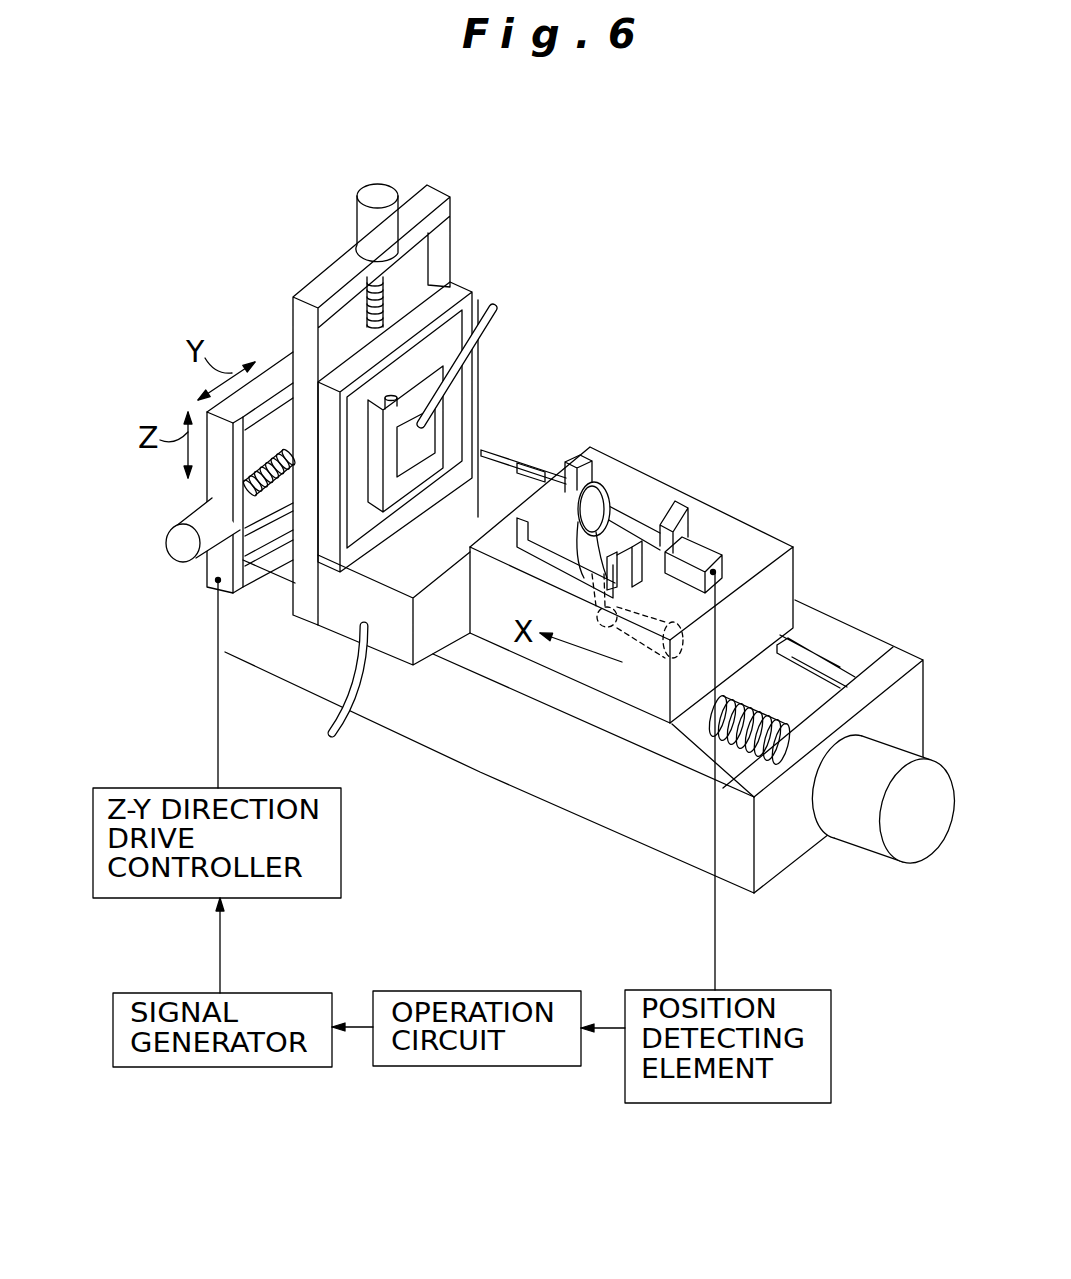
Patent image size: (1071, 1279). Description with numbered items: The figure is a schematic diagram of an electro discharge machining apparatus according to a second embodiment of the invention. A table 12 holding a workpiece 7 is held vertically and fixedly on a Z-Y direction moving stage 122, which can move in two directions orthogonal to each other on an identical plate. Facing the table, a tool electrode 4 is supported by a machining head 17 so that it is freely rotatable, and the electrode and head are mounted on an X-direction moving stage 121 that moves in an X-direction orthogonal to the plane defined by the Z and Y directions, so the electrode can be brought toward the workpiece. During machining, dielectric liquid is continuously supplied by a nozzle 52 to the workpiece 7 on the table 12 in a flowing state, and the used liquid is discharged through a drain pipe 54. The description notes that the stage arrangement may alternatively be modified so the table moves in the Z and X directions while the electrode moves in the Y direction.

The Z-Y direction moving stage 122 is at (283, 403).
The nozzle 52 is at (493, 323).
The table 12 is at (432, 415).
The workpiece 7 is at (423, 437).
The tool electrode 4 is at (497, 460).
The X-direction moving stage 121 is at (633, 477).
The machining head 17 is at (680, 528).
The drain pipe 54 is at (343, 729).